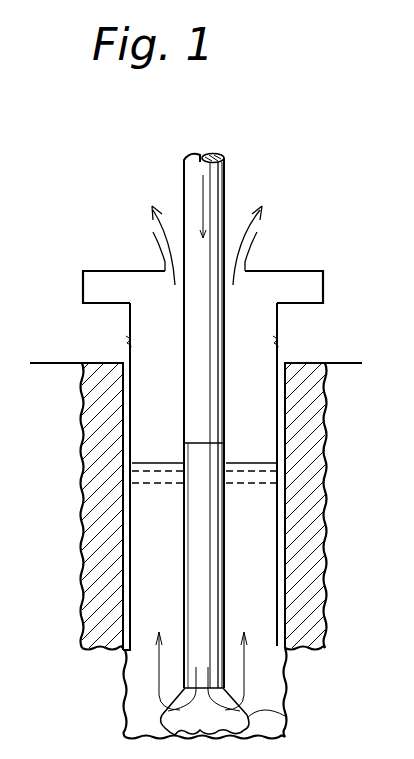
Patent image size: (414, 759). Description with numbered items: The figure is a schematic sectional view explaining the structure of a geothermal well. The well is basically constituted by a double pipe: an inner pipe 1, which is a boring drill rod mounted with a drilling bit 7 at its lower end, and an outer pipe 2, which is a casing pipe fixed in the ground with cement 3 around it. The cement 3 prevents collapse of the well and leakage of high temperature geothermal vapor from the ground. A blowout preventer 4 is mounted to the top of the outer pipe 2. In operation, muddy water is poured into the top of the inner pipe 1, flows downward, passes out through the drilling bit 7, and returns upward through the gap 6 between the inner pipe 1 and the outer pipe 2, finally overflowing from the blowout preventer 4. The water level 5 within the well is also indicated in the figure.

The inner pipe 1 is at (225, 177).
The outer pipe 2 is at (277, 355).
The cement 3 is at (312, 435).
The blowout preventer 4 is at (307, 271).
The water level 5 is at (258, 463).
The gap 6 is at (260, 407).
The drilling bit 7 is at (285, 717).